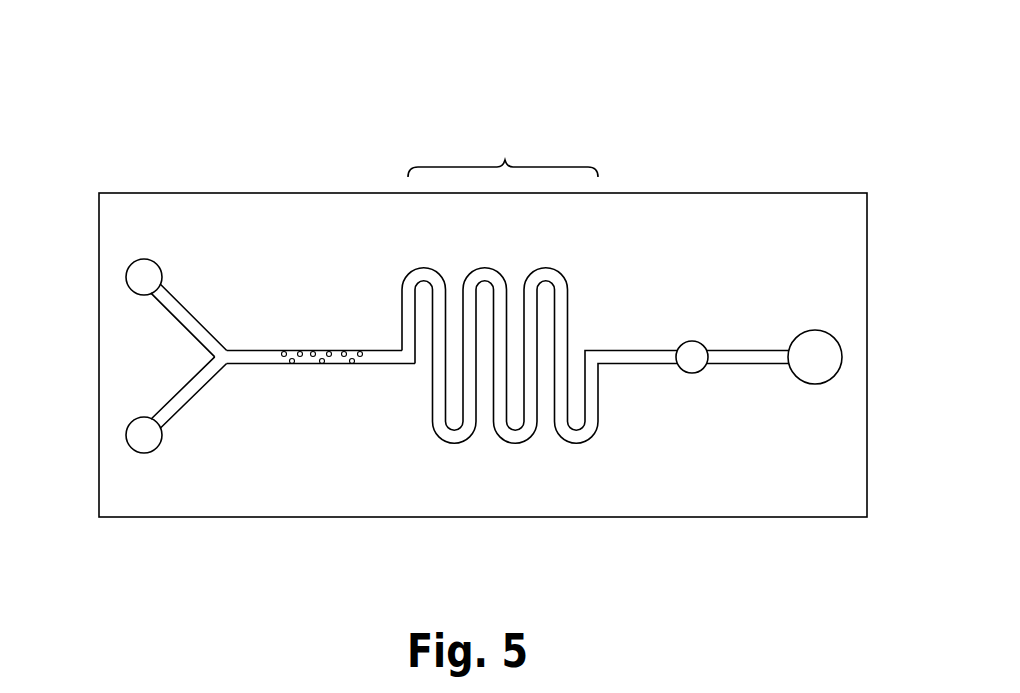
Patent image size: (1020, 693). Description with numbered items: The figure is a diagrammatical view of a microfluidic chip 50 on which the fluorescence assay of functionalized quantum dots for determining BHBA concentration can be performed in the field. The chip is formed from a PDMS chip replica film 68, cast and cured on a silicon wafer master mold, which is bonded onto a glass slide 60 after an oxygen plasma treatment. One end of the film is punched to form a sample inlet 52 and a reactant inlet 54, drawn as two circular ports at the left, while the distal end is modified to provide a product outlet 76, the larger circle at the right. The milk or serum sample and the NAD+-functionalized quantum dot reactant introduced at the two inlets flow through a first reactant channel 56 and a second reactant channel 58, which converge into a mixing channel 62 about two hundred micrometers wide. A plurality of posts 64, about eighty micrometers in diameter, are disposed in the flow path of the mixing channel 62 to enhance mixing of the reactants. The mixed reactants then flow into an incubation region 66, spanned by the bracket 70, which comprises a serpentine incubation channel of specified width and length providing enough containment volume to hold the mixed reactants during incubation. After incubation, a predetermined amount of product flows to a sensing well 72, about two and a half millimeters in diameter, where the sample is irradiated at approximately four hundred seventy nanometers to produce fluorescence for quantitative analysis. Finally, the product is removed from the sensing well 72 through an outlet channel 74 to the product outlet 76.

The microfluidic chip 50 is at (711, 56).
The sample inlet 52 is at (126, 272).
The reactant inlet 54 is at (126, 431).
The first reactant channel 56 is at (190, 313).
The second reactant channel 58 is at (187, 408).
The glass slide 60 is at (766, 193).
The mixing channel 62 is at (282, 351).
The posts 64 is at (323, 364).
The incubation region 66 is at (441, 442).
The PDMS chip replica film 68 is at (668, 225).
The mixing region 70 is at (503, 149).
The sensing well 72 is at (700, 346).
The outlet channel 74 is at (744, 364).
The product outlet 76 is at (832, 380).